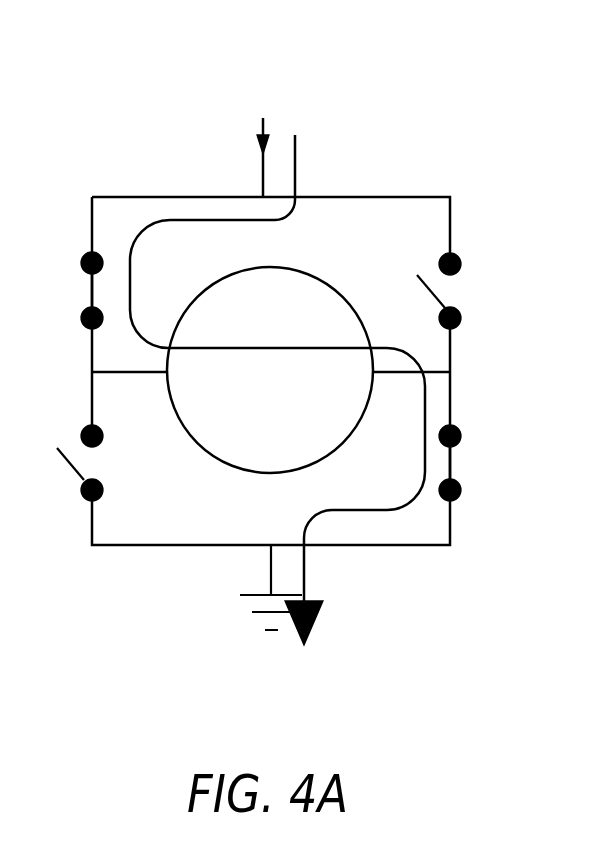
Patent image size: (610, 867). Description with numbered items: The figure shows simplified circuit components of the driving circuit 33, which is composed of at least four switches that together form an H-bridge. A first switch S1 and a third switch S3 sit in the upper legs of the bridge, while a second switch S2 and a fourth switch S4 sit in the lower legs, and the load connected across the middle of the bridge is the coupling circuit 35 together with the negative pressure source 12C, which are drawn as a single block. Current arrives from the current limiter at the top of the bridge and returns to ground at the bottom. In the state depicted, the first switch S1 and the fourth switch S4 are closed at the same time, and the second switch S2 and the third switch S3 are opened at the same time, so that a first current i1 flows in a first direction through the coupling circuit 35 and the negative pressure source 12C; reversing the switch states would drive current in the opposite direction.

The driving circuit 33 is at (112, 70).
The coupling circuit 35 is at (355, 253).
The negative pressure source 12C is at (269, 376).
The first current i1 is at (277, 390).
The first switch S1 is at (72, 290).
The second switch S2 is at (101, 463).
The third switch S3 is at (461, 291).
The fourth switch S4 is at (471, 463).